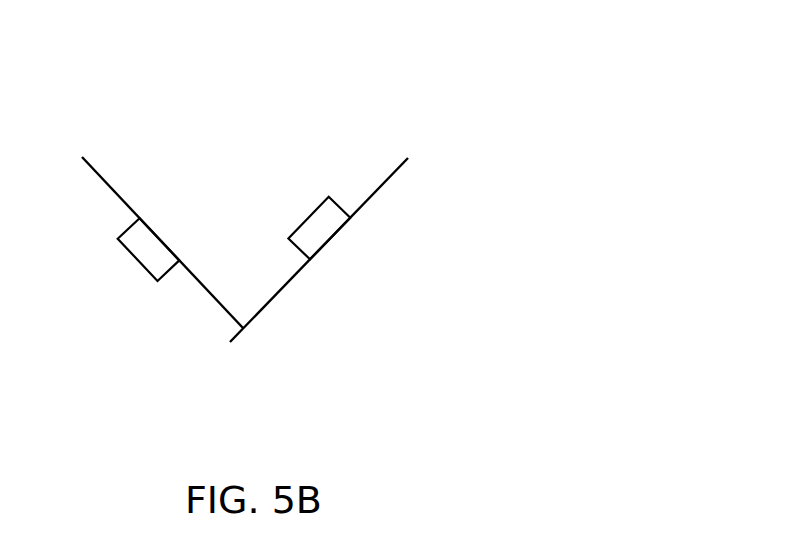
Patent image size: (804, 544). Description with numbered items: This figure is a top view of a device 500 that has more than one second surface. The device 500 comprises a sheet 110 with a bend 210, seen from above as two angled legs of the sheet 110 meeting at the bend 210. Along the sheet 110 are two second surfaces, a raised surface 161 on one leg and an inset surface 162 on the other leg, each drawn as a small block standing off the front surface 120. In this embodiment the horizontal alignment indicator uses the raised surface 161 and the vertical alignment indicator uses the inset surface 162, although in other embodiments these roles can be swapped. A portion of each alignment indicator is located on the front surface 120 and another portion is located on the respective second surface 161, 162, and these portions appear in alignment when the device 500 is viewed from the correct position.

The device 500 is at (568, 93).
The sheet 110 is at (387, 173).
The front surface 120 is at (372, 202).
The bend 210 is at (231, 341).
The raised surface 161 is at (135, 262).
The inset surface 162 is at (303, 212).